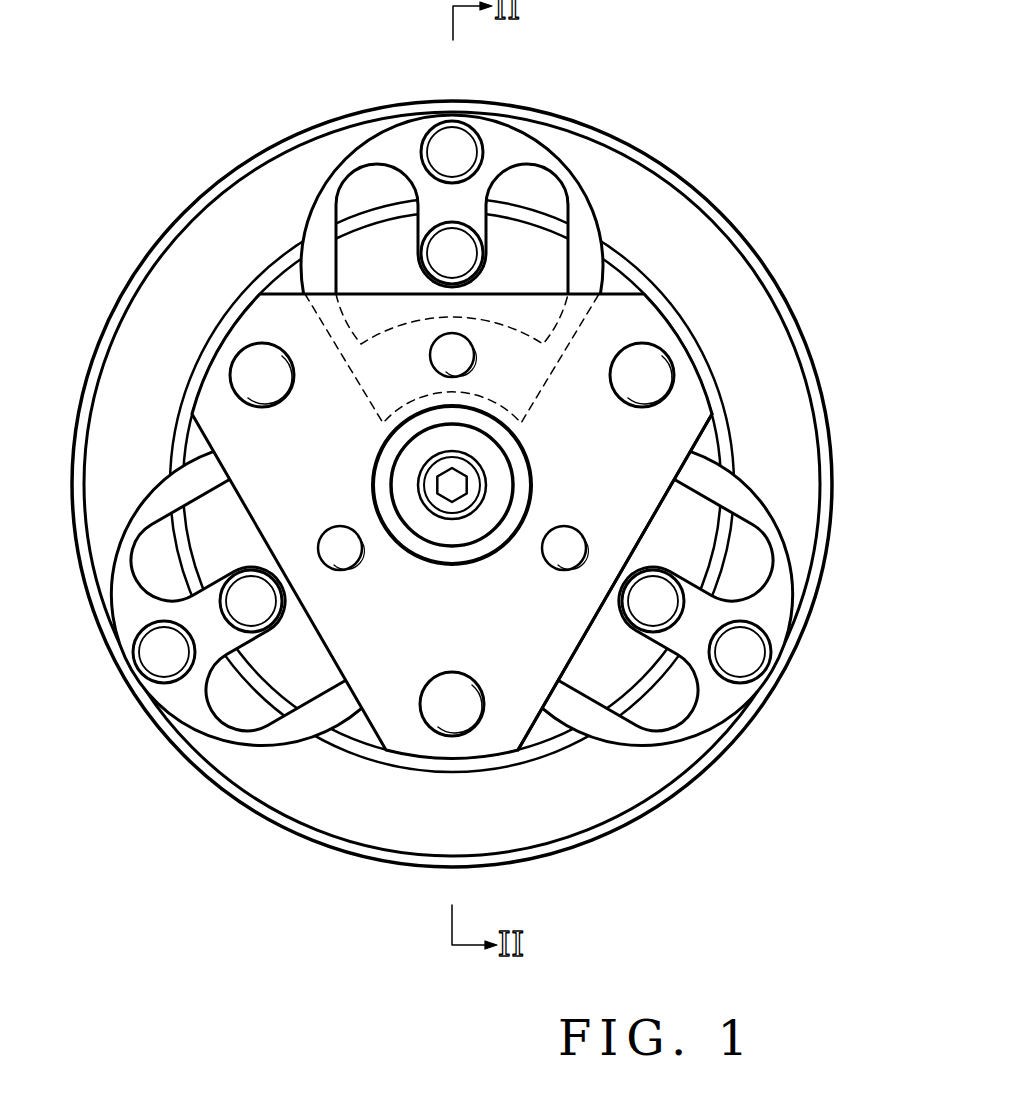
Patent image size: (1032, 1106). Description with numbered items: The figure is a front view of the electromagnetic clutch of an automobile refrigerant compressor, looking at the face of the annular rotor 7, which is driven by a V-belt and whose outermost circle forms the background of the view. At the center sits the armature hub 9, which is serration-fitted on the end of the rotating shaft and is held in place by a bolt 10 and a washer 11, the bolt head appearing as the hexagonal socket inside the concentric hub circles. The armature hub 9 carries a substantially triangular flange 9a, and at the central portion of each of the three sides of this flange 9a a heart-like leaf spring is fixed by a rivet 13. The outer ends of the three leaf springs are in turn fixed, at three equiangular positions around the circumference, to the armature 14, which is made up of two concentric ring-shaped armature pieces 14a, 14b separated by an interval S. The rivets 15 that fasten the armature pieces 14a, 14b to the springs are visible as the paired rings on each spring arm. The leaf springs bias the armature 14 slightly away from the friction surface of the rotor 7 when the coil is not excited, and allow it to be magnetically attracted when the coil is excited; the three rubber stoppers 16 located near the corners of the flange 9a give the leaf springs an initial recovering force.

The rotor 7 is at (631, 127).
The armature hub 9 is at (675, 516).
The triangular flange 9a is at (695, 440).
The bolt 10 is at (487, 470).
The washer 11 is at (515, 490).
The rivet 13 is at (465, 337).
The armature 14 is at (789, 290).
The armature piece 14a is at (728, 228).
The armature piece 14b is at (618, 267).
The rivet 15 is at (449, 150).
The rubber stopper 16 is at (253, 362).
The interval S is at (672, 290).